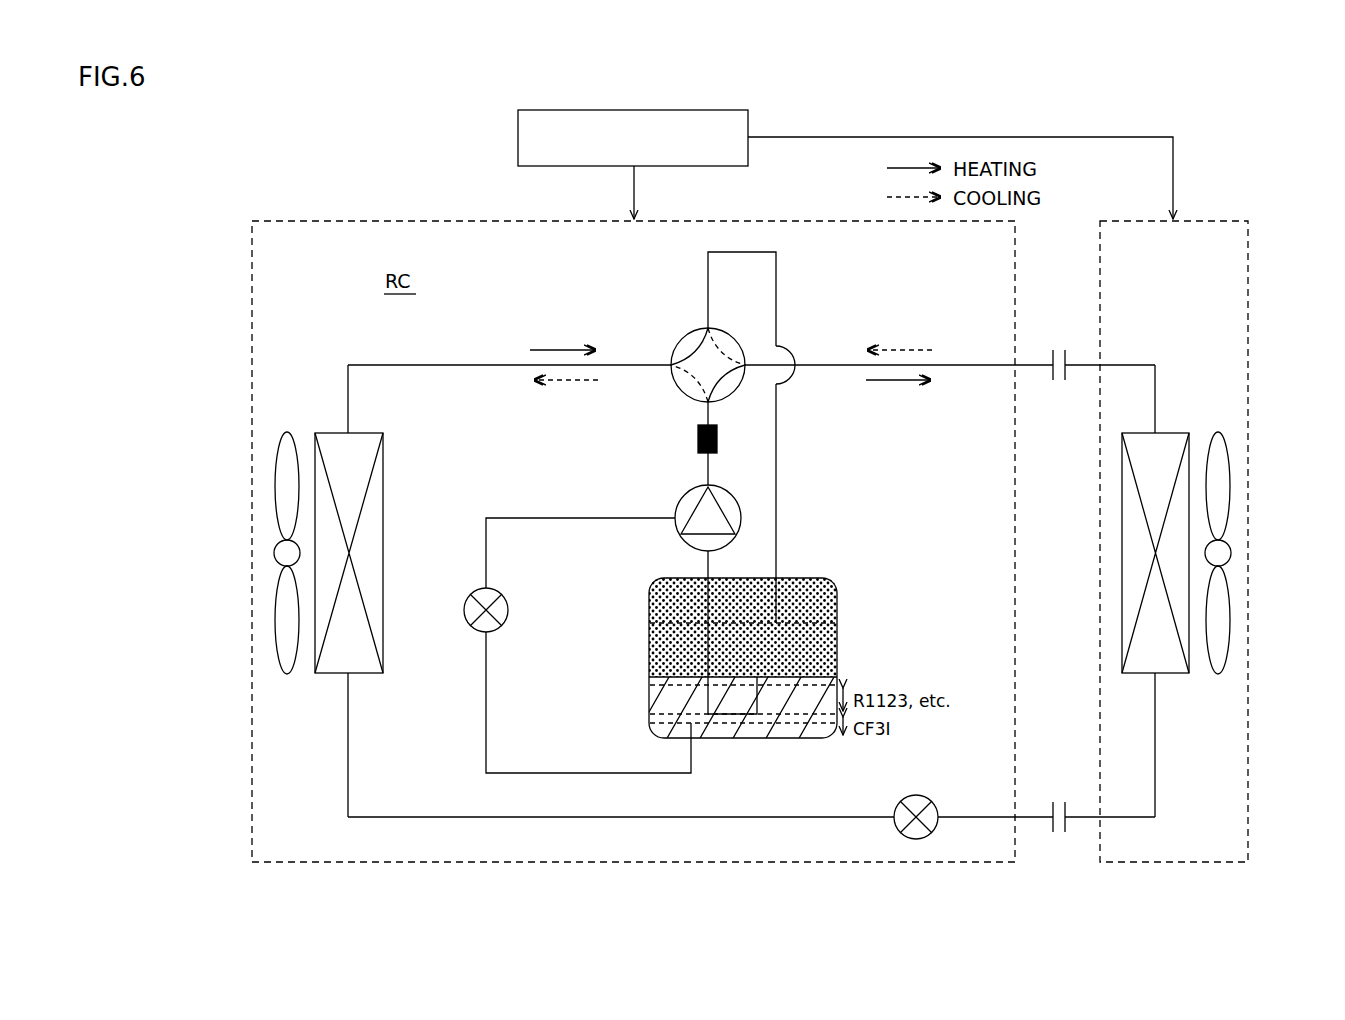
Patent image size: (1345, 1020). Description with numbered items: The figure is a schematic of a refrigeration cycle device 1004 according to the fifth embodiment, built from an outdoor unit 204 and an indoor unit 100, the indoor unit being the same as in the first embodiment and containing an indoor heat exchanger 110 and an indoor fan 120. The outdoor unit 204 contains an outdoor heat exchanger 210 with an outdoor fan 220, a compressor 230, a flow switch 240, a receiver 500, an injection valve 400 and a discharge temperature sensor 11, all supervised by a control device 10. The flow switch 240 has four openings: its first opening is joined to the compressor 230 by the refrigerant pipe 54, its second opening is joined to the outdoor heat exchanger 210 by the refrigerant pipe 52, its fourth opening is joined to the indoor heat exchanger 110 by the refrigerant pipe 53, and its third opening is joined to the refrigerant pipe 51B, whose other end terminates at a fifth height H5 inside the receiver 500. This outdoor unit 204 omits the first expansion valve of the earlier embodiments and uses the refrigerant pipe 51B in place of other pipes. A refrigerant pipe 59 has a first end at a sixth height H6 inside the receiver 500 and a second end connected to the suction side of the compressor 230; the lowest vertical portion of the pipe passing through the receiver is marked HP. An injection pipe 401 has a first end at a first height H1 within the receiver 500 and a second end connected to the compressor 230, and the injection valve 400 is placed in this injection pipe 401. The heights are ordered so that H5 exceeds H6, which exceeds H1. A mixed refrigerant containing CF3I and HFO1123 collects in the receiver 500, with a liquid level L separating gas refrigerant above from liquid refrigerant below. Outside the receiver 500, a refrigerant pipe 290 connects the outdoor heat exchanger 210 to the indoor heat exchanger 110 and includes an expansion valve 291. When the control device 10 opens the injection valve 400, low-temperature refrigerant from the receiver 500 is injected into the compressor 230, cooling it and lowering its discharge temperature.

The control device 10 is at (695, 110).
The refrigeration cycle device 1004 is at (1278, 134).
The indoor unit 100 is at (1215, 221).
The outdoor unit 204 is at (378, 221).
The refrigerant pipe 52 is at (466, 363).
The refrigerant pipe 53 is at (984, 363).
The flow switch 240 is at (686, 336).
The refrigerant pipe 51B is at (780, 478).
The discharge temperature sensor 11 is at (695, 438).
The refrigerant pipe 54 is at (705, 470).
The compressor 230 is at (686, 541).
The injection valve 400 is at (470, 597).
The injection pipe 401 is at (483, 698).
The receiver 500 is at (764, 740).
The refrigerant pipe 59 is at (700, 650).
The fifth height H5 is at (650, 623).
The sixth height H6 is at (650, 685).
The lowest portion of the refrigerant pipe HP is at (650, 713).
The first height H1 is at (650, 724).
The liquid level L is at (830, 682).
The outdoor heat exchanger 210 is at (328, 430).
The outdoor fan 220 is at (275, 616).
The indoor heat exchanger 110 is at (1170, 432).
The indoor fan 120 is at (1232, 485).
The refrigerant pipe 290 is at (612, 817).
The expansion valve 291 is at (926, 804).